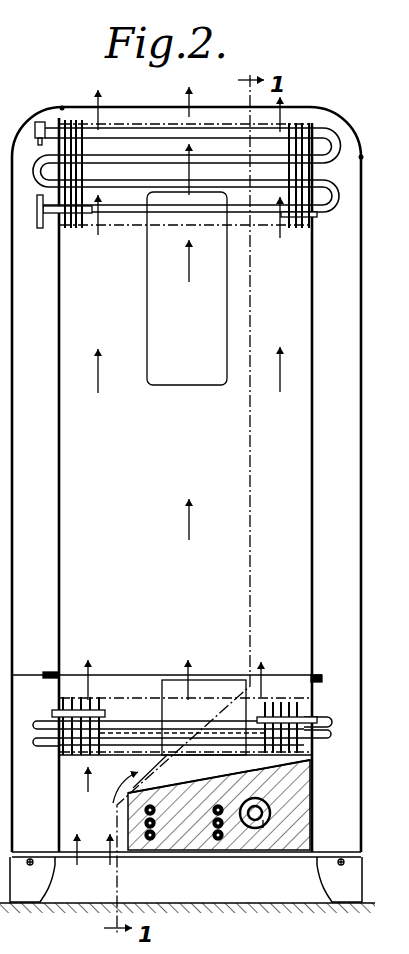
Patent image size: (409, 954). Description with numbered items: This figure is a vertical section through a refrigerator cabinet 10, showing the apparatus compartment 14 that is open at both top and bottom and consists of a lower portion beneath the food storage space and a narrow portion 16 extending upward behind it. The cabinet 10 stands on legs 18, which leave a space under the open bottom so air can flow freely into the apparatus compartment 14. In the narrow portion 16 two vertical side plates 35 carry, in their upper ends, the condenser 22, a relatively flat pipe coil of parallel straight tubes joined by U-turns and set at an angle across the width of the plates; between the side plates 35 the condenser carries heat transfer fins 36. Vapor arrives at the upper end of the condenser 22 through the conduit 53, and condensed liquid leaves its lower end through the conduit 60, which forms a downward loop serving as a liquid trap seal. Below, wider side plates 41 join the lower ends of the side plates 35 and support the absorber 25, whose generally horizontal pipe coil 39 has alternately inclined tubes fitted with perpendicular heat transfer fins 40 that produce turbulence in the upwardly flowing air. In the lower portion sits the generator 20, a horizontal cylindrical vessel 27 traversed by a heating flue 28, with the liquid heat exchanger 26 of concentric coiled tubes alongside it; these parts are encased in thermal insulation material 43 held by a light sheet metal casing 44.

The refrigerator cabinet 10 is at (341, 111).
The apparatus compartment 14 is at (195, 592).
The narrow portion 16 is at (187, 327).
The legs 18 is at (40, 888).
The generator 20 is at (246, 862).
The condenser 22 is at (72, 122).
The absorber 25 is at (307, 705).
The liquid heat exchanger 26 is at (148, 840).
The horizontal cylindrical vessel 27 is at (263, 828).
The flue 28 is at (258, 798).
The side plates 35 is at (60, 453).
The heat transfer fins 36 is at (74, 228).
The absorber pipe coil 39 is at (123, 712).
The heat transfer fins 40 is at (279, 704).
The side plates 41 is at (60, 782).
The thermal insulation material 43 is at (305, 808).
The sheet metal casing 44 is at (203, 785).
The conduit 53 is at (40, 145).
The conduit 60 is at (40, 229).